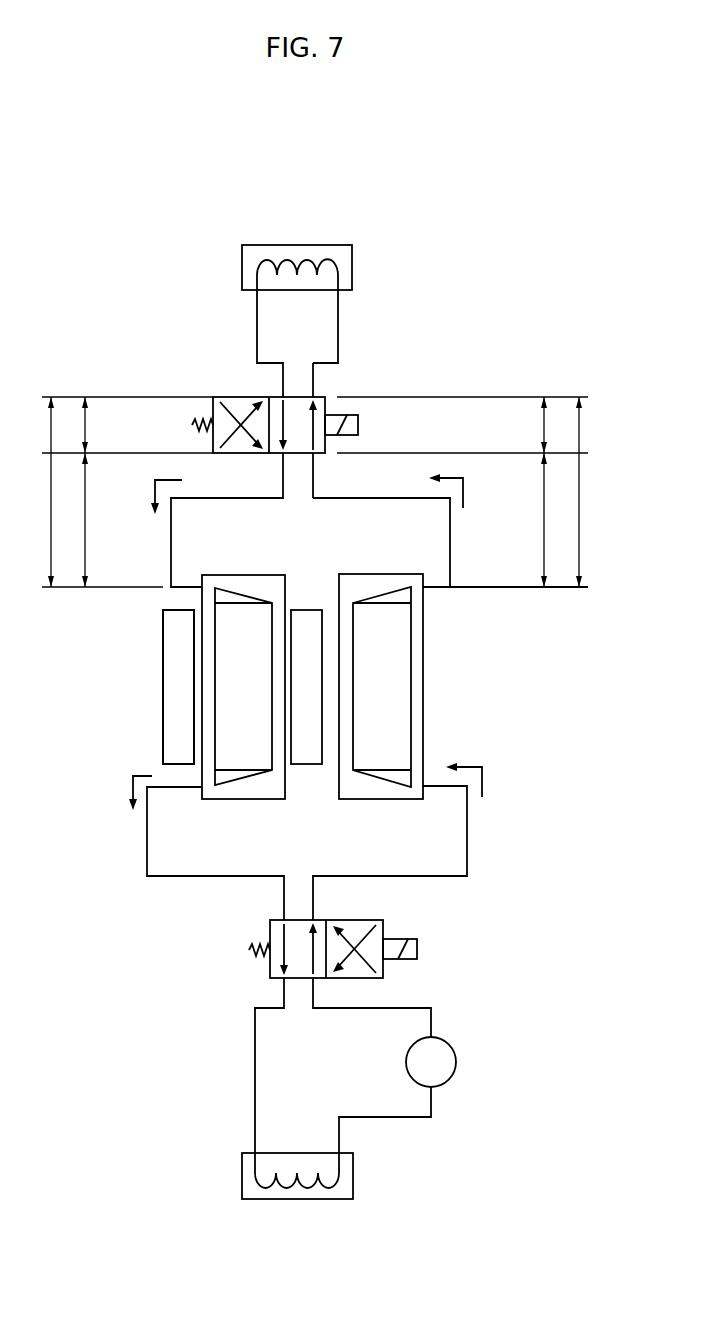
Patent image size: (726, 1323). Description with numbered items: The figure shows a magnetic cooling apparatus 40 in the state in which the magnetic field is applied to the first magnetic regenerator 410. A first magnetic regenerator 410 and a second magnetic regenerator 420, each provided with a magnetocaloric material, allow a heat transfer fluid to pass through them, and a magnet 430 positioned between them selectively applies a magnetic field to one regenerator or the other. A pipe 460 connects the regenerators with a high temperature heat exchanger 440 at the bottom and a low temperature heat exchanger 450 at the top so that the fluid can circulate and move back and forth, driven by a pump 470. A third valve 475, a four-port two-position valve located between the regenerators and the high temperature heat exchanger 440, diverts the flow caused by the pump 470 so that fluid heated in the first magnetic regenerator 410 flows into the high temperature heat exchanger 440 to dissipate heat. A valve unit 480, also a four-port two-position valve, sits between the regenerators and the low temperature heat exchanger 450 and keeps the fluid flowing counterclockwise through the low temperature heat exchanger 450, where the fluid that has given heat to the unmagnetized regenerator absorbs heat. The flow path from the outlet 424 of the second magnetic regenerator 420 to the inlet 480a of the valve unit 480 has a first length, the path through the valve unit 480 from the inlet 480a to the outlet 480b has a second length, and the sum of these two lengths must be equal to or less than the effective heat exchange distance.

The magnetic cooling apparatus 40 is at (287, 152).
The low temperature heat exchanger 450 is at (350, 245).
The valve unit 480 is at (325, 397).
The inlet of the valve unit 480a is at (313, 453).
The outlet of the valve unit 480b is at (313, 396).
The first magnetic regenerator 410 is at (248, 575).
The second magnetic regenerator 420 is at (383, 575).
The outlet of the second magnetic regenerator 424 is at (425, 588).
The magnet 430 is at (170, 750).
The third valve 475 is at (383, 920).
The pump 470 is at (448, 1073).
The pipe 460 is at (415, 1117).
The high temperature heat exchanger 440 is at (353, 1175).